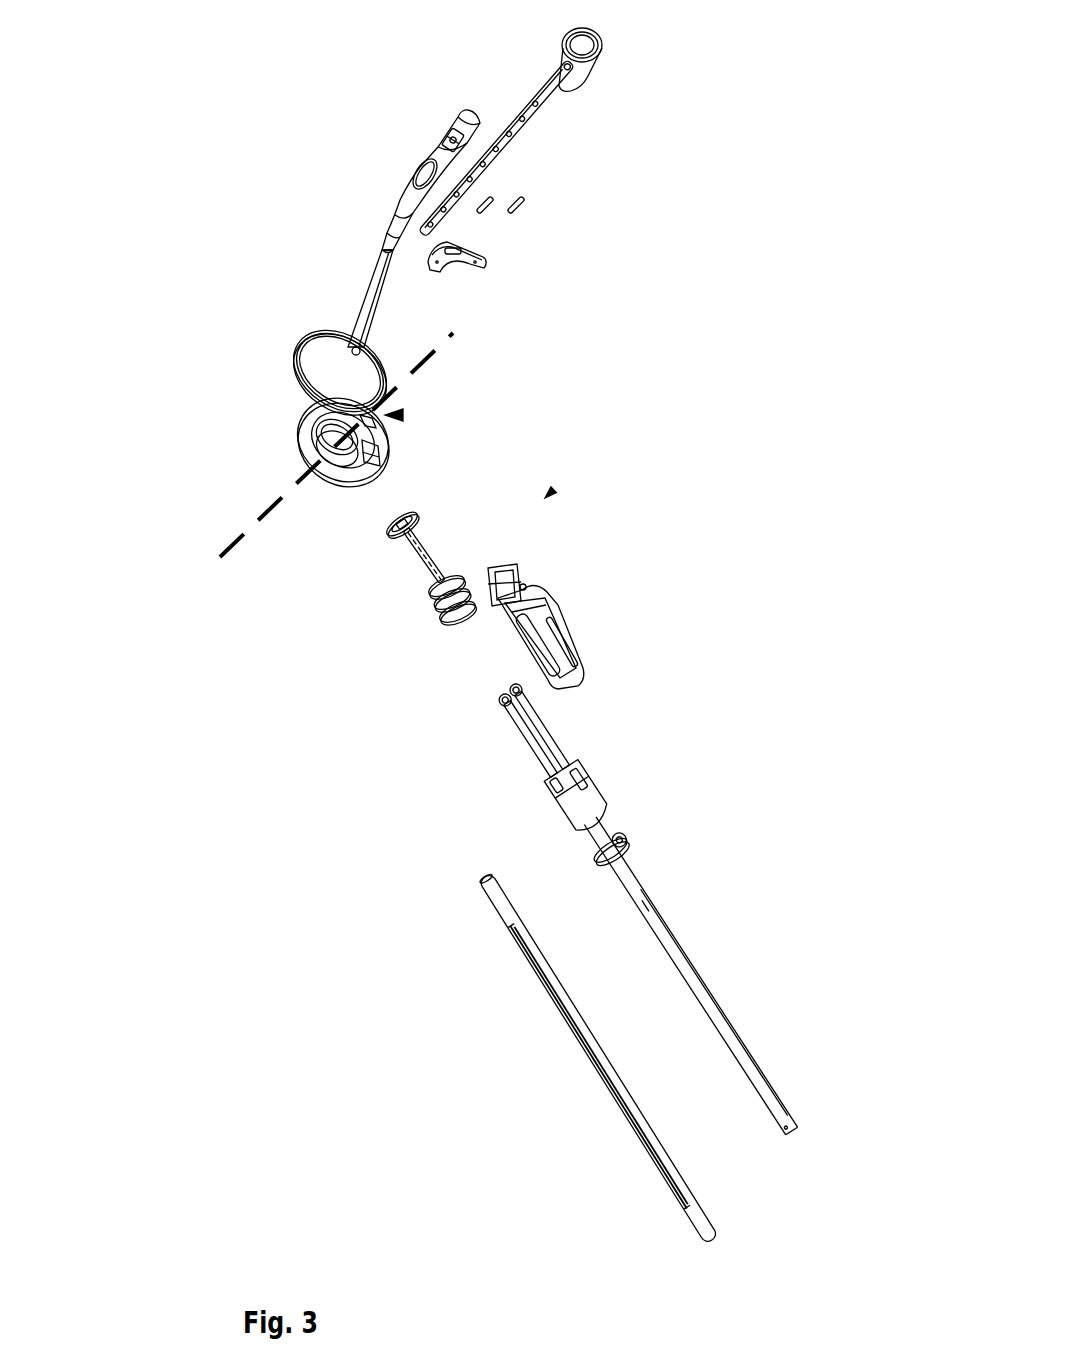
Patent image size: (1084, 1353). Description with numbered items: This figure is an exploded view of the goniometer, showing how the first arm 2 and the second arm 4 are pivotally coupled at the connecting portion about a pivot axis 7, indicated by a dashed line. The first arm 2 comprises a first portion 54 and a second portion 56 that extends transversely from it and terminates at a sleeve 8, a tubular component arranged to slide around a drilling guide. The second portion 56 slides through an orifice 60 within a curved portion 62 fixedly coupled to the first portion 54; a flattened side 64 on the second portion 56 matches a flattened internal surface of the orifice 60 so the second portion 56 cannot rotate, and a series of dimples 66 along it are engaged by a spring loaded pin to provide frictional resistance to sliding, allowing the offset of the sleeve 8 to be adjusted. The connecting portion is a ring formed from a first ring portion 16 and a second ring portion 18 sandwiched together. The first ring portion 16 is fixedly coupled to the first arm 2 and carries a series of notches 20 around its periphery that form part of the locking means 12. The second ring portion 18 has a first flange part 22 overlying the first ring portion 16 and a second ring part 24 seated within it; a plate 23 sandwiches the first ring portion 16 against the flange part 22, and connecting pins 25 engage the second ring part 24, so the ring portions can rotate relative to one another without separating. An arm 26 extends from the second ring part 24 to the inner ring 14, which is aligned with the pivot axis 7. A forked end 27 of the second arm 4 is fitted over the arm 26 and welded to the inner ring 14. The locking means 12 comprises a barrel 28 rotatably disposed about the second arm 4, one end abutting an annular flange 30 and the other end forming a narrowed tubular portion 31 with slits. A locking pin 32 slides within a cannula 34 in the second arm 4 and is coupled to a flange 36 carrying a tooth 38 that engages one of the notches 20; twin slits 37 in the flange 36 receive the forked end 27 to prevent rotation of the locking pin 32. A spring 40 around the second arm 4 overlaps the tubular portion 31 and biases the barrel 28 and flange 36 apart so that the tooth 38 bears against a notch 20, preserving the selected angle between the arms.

The first arm 2 is at (380, 267).
The second arm 4 is at (690, 976).
The pivot axis 7 is at (437, 358).
The sleeve 8 is at (585, 77).
The locking means 12 is at (555, 488).
The inner ring 14 is at (343, 430).
The first ring portion 16 is at (300, 342).
The second ring portion 18 is at (318, 448).
The notches 20 is at (403, 415).
The first flange part 22 is at (347, 475).
The plate 23 is at (472, 268).
The second ring part 24 is at (373, 422).
The connecting pins 25 is at (520, 198).
The arm 26 is at (377, 457).
The forked end 27 is at (534, 730).
The barrel 28 is at (557, 618).
The annular flange 30 is at (611, 850).
The narrowed tubular portion 31 is at (515, 587).
The locking pin 32 is at (397, 518).
The cannula 34 is at (562, 758).
The flange 36 is at (387, 533).
The twin slits 37 is at (402, 524).
The tooth 38 is at (402, 525).
The spring 40 is at (443, 620).
The first portion 54 is at (370, 300).
The second portion 56 is at (567, 67).
The orifice 60 is at (417, 168).
The curved portion 62 is at (438, 145).
The flattened side 64 is at (532, 112).
The dimples 66 is at (442, 195).